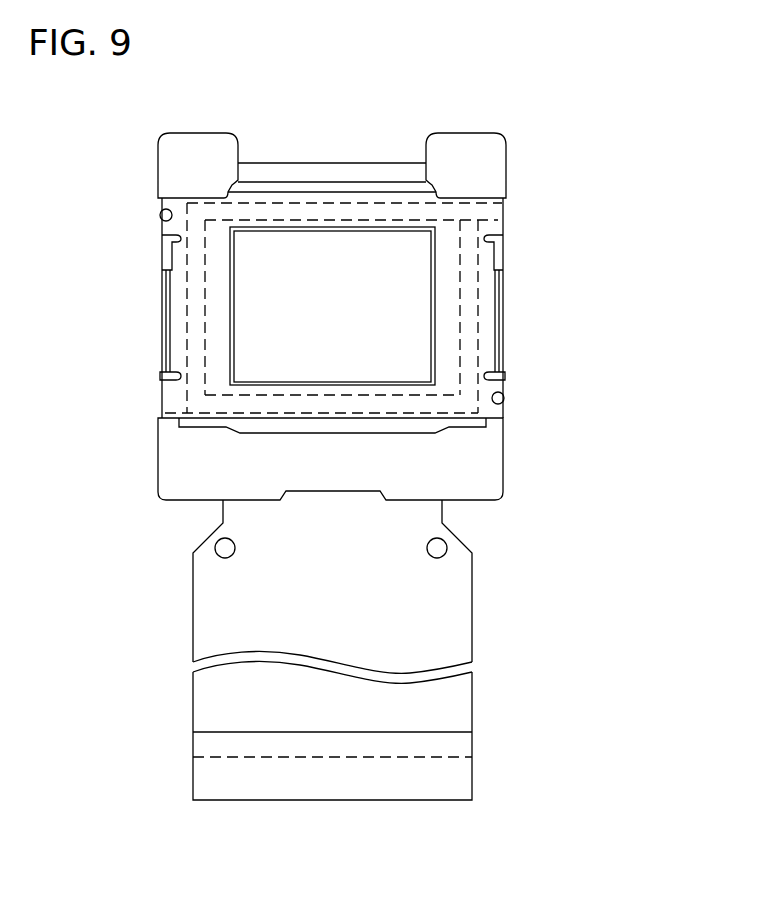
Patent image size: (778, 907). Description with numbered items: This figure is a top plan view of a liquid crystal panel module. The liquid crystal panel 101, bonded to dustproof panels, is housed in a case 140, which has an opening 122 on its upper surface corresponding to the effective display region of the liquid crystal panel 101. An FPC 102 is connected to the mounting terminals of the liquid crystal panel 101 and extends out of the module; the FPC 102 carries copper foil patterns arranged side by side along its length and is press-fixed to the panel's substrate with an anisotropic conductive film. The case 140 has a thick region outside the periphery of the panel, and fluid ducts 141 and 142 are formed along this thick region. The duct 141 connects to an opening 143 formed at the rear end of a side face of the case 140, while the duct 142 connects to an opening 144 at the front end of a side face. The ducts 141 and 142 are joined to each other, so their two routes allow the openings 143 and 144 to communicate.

The case 140 is at (493, 146).
The fluid duct 141 is at (477, 315).
The fluid duct 142 is at (188, 300).
The opening 143 is at (503, 207).
The opening 144 is at (163, 407).
The opening 122 is at (403, 227).
The liquid crystal panel 101 is at (318, 368).
The FPC 102 is at (437, 612).